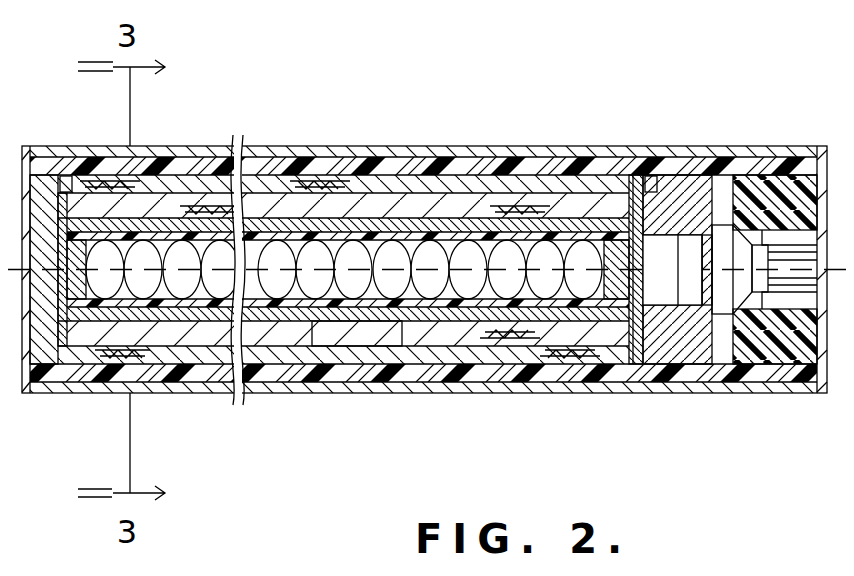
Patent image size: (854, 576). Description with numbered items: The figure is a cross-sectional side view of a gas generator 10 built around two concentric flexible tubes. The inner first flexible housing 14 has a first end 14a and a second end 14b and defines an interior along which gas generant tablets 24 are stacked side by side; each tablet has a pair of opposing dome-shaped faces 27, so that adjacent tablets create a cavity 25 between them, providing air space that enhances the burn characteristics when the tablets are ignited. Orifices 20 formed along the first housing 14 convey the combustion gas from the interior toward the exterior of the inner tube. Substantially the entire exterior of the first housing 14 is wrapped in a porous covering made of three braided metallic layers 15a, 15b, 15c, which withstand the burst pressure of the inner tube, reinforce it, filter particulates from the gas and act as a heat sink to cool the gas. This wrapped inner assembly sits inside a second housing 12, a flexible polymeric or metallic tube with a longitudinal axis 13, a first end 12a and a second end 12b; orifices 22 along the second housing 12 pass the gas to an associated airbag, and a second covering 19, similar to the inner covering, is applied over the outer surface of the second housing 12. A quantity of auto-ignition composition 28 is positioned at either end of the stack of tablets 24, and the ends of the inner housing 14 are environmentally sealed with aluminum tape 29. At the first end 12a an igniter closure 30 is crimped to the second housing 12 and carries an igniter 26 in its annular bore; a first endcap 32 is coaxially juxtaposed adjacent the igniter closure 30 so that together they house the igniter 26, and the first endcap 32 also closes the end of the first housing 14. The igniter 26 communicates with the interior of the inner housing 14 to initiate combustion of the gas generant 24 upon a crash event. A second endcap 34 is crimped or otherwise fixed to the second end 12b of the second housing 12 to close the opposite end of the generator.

The gas generator 10 is at (530, 104).
The second housing 12 is at (150, 382).
The first end of second housing 12a is at (788, 168).
The second end of second housing 12b is at (40, 147).
The longitudinal axis 13 is at (468, 165).
The first flexible housing 14 is at (474, 370).
The first end of first housing 14a is at (636, 364).
The second end of first housing 14b is at (92, 350).
The first braided layer 15a is at (283, 355).
The second braided layer 15b is at (558, 370).
The third braided layer 15c is at (522, 365).
The second covering 19 is at (207, 393).
The orifices of first housing 20 is at (178, 230).
The orifices of second housing 22 is at (401, 393).
The gas generant tablets 24 is at (394, 253).
The cavity 25 is at (298, 180).
The igniter 26 is at (735, 190).
The dome-shaped faces 27 is at (430, 380).
The auto-ignition composition 28 is at (614, 205).
The aluminum tape 29 is at (72, 200).
The igniter closure 30 is at (790, 350).
The first endcap 32 is at (690, 350).
The second endcap 34 is at (25, 375).